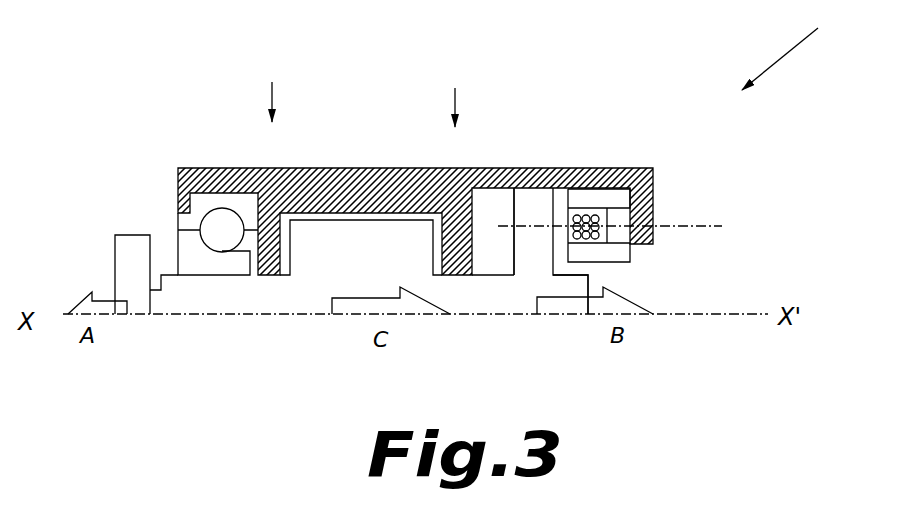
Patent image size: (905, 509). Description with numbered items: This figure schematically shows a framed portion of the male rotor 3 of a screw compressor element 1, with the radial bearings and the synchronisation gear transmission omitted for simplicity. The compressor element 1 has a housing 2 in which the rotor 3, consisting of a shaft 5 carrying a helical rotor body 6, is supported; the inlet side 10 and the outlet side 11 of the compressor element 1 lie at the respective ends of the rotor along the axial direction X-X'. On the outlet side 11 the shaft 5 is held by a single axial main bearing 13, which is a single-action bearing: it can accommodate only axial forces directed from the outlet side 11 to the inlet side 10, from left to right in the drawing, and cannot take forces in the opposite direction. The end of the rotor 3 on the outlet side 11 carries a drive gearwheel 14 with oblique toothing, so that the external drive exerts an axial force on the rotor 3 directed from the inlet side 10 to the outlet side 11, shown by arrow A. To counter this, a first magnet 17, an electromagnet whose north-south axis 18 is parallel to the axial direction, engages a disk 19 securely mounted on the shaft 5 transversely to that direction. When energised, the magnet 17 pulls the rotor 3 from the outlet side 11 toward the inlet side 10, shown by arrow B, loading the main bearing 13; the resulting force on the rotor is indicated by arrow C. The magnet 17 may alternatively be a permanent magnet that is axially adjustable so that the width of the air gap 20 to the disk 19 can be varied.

The compressor element 1 is at (792, 45).
The housing 2 is at (635, 170).
The male rotor 3 is at (248, 301).
The shaft 5 is at (490, 302).
The helical rotor body 6 is at (345, 250).
The inlet side 10 is at (464, 82).
The outlet side 11 is at (268, 80).
The axial main bearing 13 is at (207, 228).
The drive gearwheel 14 is at (122, 255).
The first magnet 17 is at (623, 205).
The north-south axis 18 is at (415, 265).
The disk 19 is at (525, 222).
The air gap 20 is at (563, 193).